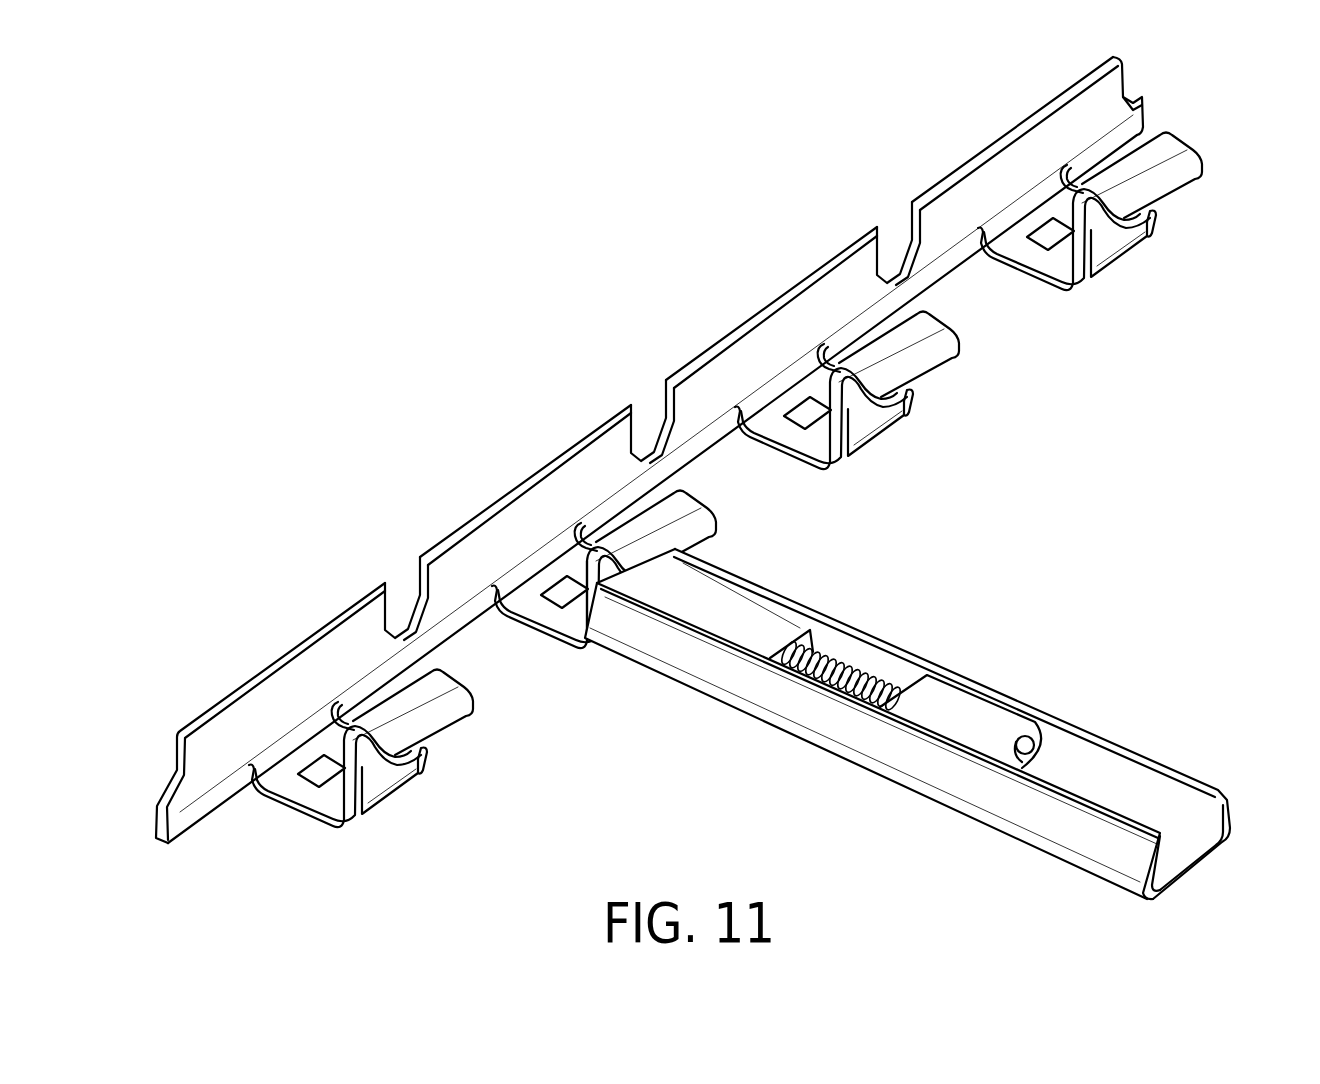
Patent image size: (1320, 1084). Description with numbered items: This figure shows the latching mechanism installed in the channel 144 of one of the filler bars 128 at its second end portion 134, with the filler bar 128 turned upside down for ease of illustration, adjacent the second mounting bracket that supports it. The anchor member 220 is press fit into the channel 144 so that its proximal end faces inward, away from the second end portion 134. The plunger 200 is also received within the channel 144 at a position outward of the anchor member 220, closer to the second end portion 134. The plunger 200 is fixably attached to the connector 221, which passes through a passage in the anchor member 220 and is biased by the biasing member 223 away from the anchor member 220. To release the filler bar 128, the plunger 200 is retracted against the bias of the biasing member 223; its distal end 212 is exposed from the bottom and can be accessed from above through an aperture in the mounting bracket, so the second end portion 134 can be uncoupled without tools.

The filler bar 128 is at (907, 724).
The second end portion 134 is at (604, 690).
The channel 144 is at (1117, 780).
The plunger 200 is at (752, 624).
The distal end 212 is at (546, 623).
The anchor member 220 is at (955, 710).
The connector 221 is at (1027, 740).
The biasing member 223 is at (857, 674).